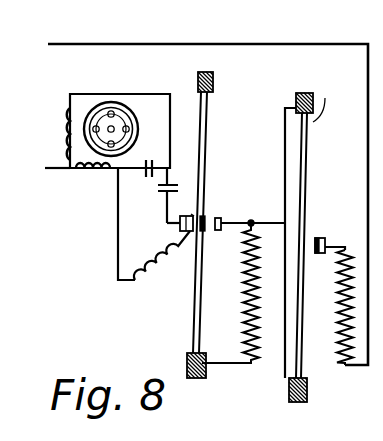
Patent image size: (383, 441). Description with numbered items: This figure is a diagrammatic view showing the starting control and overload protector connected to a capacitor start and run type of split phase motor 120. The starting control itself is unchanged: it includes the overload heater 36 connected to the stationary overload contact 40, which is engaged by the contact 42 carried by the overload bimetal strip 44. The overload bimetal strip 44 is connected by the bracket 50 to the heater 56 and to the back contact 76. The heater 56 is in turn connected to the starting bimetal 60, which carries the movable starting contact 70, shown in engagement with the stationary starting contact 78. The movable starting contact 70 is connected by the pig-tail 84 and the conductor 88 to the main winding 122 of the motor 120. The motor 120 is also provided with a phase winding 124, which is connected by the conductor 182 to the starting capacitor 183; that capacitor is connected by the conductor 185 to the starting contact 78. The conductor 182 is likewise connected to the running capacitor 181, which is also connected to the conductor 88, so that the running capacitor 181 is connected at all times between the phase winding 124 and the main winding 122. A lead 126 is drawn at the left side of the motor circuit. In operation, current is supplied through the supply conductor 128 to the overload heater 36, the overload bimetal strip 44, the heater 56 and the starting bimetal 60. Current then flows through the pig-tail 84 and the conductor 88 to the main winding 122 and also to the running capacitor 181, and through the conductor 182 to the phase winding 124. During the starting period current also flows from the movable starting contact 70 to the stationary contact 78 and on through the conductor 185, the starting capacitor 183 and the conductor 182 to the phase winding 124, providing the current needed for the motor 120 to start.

The supply conductor 128 is at (226, 44).
The conductor 182 is at (100, 94).
The capacitor start and run motor 120 is at (127, 94).
The phase winding 124 is at (65, 128).
The main winding 122 is at (96, 172).
The lead wire 126 is at (50, 168).
The running capacitor 181 is at (163, 156).
The starting capacitor 183 is at (160, 190).
The conductor 185 is at (170, 223).
The stationary starting contact 78 is at (192, 214).
The movable starting contact 70 is at (205, 218).
The back contact 76 is at (222, 221).
The conductor 88 is at (117, 252).
The pig-tail 84 is at (148, 277).
The starting bimetal 60 is at (194, 322).
The heater 56 is at (246, 313).
The bracket 50 is at (285, 162).
The overload bimetal strip 44 is at (310, 150).
The contact 42 is at (313, 238).
The stationary overload contact 40 is at (328, 245).
The overload heater 36 is at (340, 344).